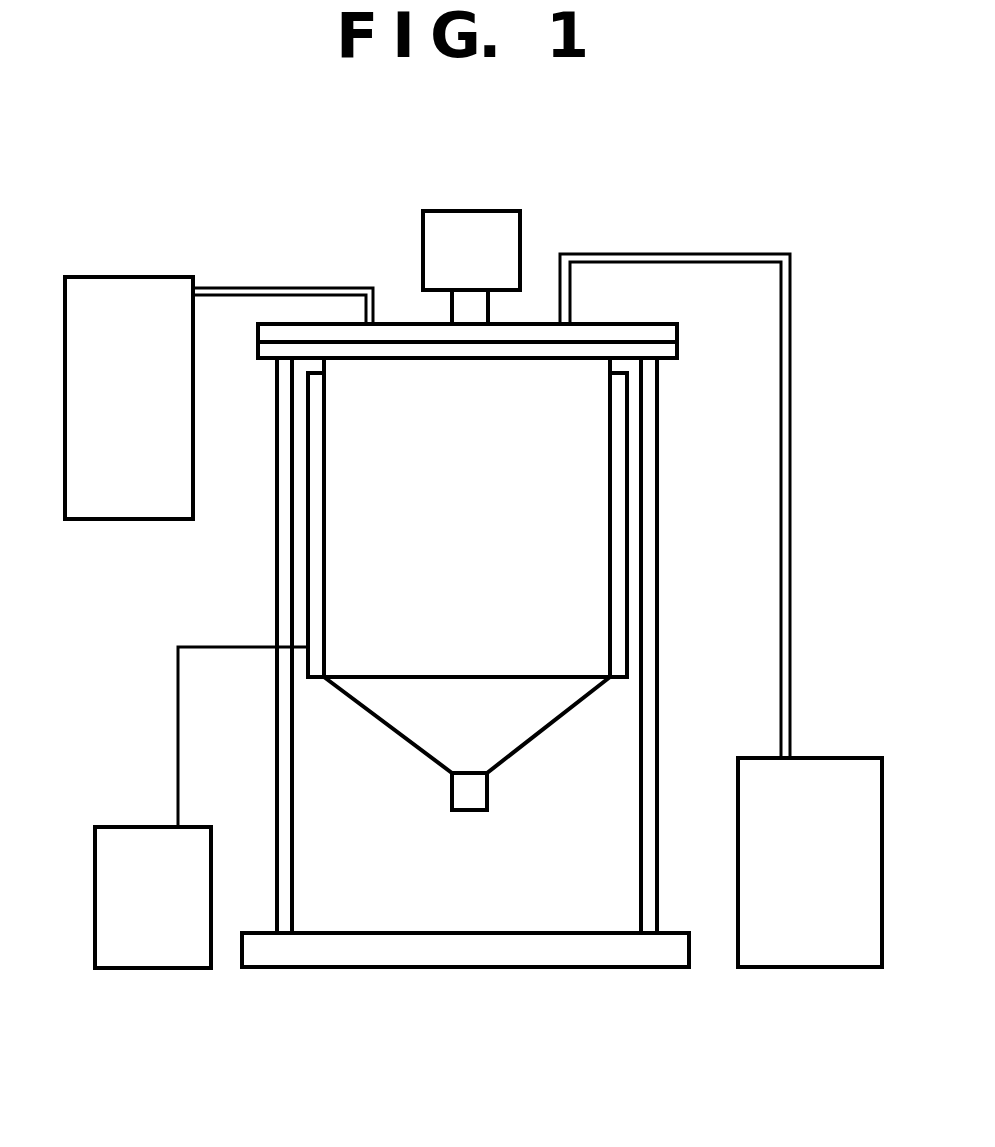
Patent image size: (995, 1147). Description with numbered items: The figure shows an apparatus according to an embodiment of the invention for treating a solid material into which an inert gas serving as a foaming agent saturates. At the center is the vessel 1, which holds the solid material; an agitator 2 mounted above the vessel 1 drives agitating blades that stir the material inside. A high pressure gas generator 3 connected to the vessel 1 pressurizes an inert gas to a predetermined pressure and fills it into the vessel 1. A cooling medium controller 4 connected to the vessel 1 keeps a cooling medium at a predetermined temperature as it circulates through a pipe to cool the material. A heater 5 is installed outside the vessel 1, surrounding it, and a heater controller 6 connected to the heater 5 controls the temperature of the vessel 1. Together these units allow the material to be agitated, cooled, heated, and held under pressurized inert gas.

The vessel 1 is at (368, 507).
The agitator 2 is at (434, 250).
The high pressure gas generator 3 is at (838, 800).
The cooling medium controller 4 is at (125, 310).
The heater 5 is at (622, 568).
The heater controller 6 is at (133, 847).